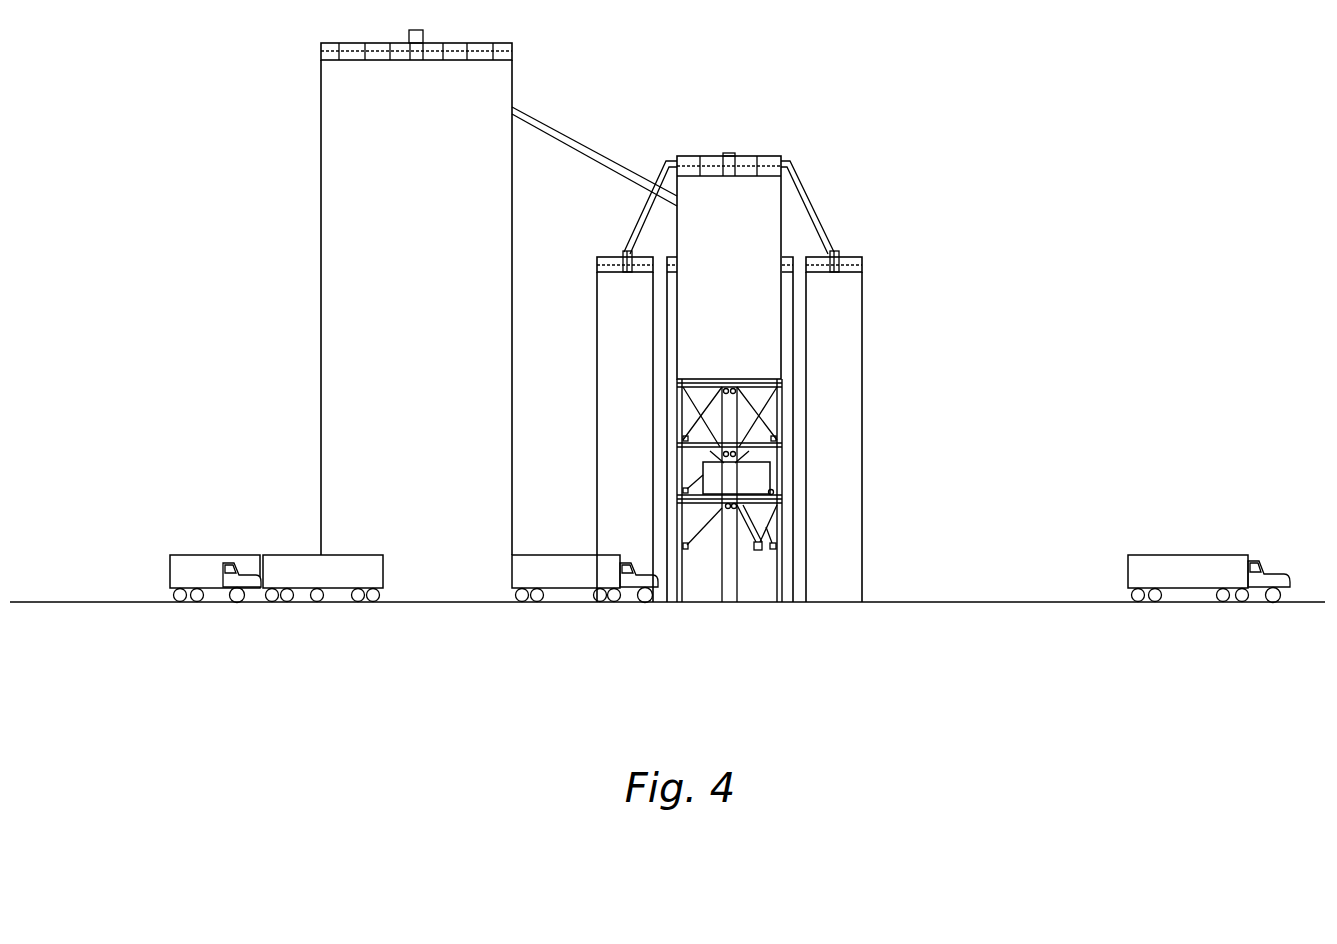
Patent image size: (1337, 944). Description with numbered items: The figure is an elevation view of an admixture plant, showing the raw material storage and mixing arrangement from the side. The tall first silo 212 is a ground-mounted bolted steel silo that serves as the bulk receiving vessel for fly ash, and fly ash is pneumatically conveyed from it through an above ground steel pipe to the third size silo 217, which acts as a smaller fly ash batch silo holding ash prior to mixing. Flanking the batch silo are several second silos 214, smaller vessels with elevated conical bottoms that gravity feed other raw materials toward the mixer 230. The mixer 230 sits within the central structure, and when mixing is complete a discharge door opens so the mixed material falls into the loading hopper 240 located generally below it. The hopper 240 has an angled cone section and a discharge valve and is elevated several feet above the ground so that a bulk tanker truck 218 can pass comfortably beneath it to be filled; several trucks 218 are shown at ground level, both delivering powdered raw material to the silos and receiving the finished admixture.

The first silo 212 is at (478, 98).
The second silo 214 is at (673, 315).
The third size silo 217 is at (755, 222).
The bulk tanker truck 218 is at (202, 570).
The material mixer 230 is at (757, 476).
The loading hopper 240 is at (760, 522).